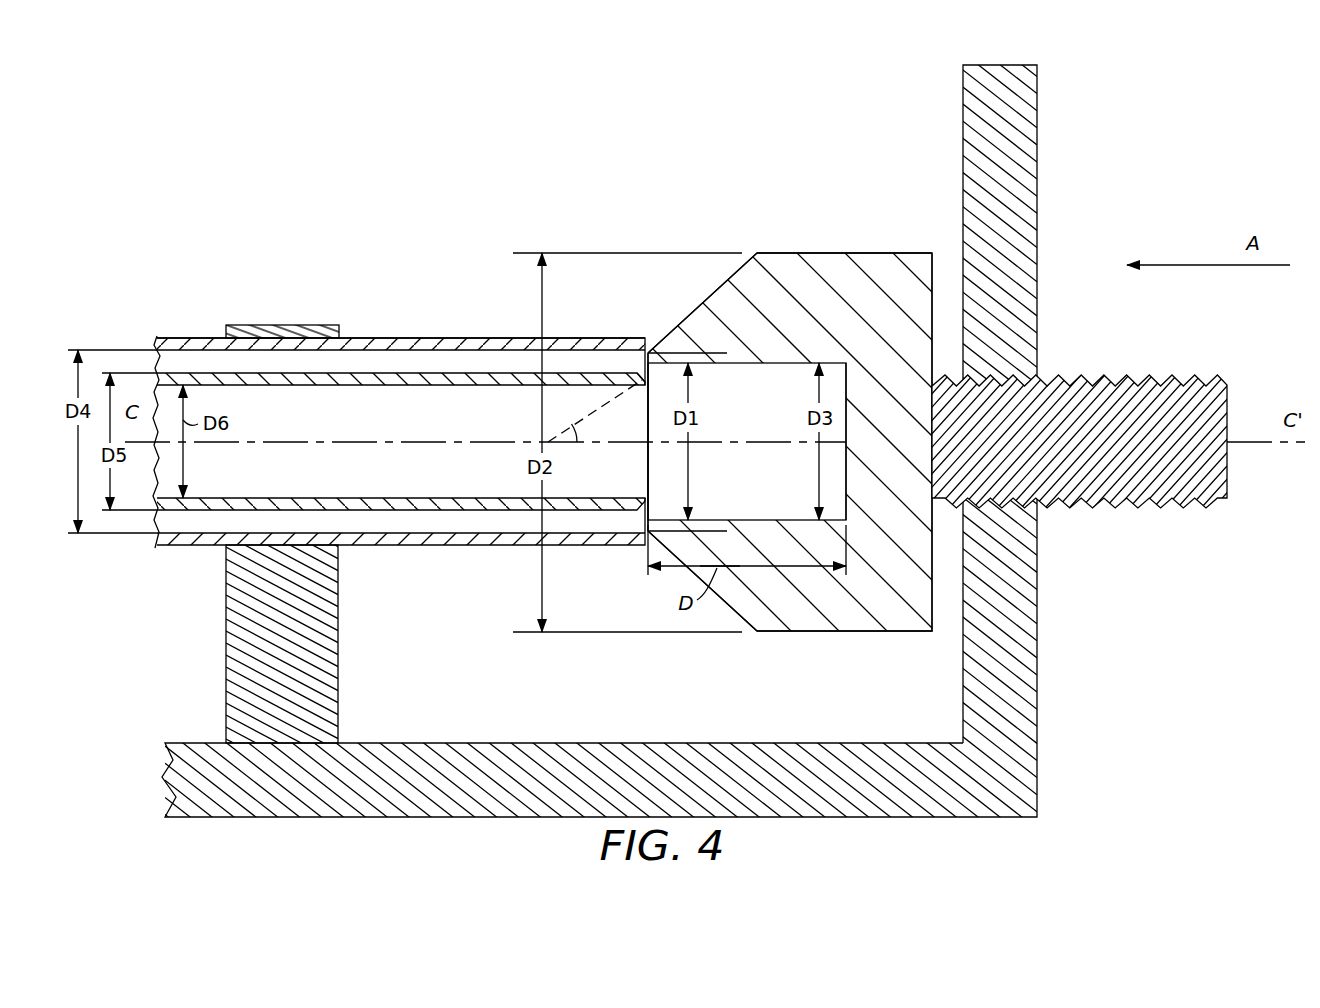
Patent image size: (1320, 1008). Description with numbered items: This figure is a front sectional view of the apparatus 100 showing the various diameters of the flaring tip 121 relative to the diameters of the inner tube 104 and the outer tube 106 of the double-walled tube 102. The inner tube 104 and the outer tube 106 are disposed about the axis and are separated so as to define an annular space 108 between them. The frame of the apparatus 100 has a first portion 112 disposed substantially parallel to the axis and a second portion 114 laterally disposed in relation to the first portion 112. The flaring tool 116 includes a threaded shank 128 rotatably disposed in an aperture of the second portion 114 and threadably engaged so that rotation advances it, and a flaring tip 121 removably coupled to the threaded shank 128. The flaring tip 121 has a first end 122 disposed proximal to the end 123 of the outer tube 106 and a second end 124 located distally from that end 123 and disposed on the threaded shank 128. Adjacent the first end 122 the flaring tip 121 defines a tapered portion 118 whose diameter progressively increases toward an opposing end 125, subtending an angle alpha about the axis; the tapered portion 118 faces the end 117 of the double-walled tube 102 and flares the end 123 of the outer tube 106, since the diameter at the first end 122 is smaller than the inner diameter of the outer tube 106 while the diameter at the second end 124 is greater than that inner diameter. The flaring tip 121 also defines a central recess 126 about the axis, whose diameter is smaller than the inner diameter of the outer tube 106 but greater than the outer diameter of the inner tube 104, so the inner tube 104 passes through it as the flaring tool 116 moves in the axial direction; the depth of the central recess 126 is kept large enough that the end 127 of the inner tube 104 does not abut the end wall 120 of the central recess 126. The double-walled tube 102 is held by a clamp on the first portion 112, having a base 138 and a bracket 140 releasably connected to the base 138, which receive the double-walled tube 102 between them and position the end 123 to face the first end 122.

The apparatus 100 is at (234, 170).
The double-walled tube 102 is at (427, 308).
The inner tube 104 is at (177, 503).
The outer tube 106 is at (172, 347).
The annular space 108 is at (205, 350).
The first portion 112 is at (548, 765).
The second portion 114 is at (995, 110).
The flaring tool 116 is at (917, 230).
The end of the double-walled tube 117 is at (647, 413).
The tapered portion 118 is at (718, 290).
The end wall 120 is at (838, 395).
The flaring tip 121 is at (757, 230).
The first end 122 is at (640, 372).
The end of the outer tube 123 is at (648, 350).
The second end 124 is at (932, 632).
The opposing end of the tapered portion 125 is at (757, 632).
The central recess 126 is at (798, 385).
The end of the inner tube 127 is at (625, 380).
The threaded shank 128 is at (1145, 475).
The base 138 is at (226, 652).
The bracket 140 is at (307, 328).